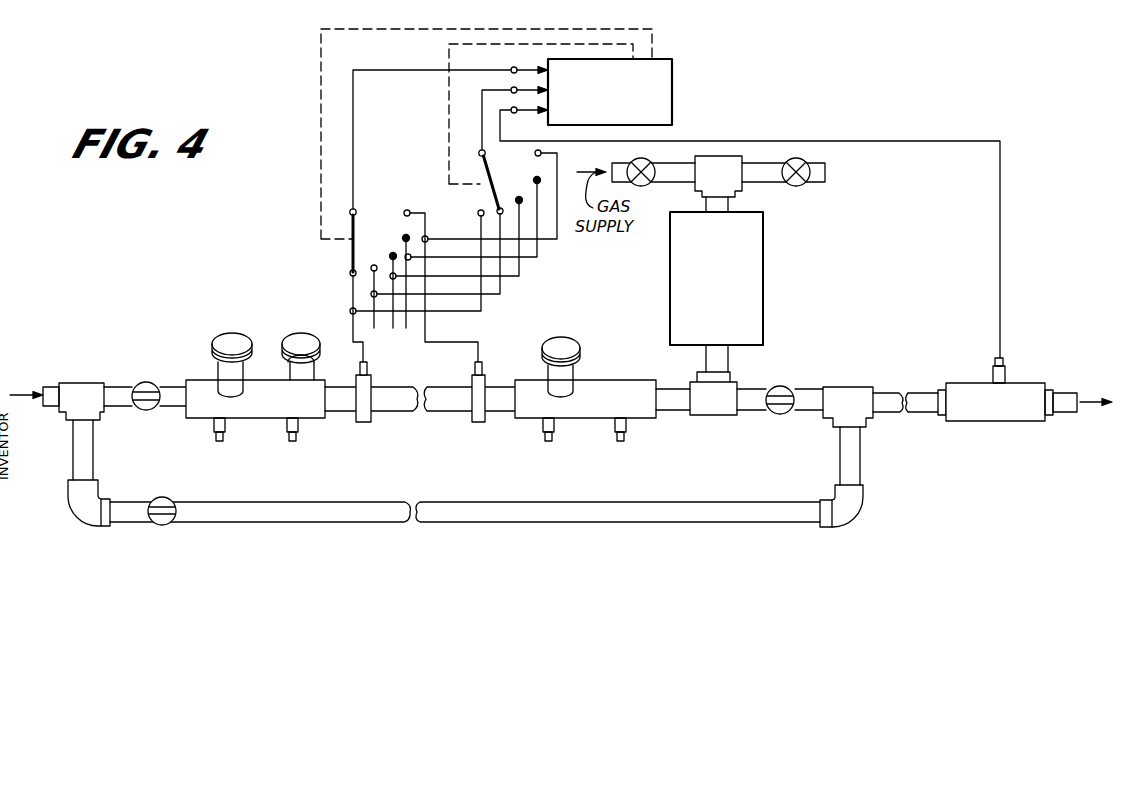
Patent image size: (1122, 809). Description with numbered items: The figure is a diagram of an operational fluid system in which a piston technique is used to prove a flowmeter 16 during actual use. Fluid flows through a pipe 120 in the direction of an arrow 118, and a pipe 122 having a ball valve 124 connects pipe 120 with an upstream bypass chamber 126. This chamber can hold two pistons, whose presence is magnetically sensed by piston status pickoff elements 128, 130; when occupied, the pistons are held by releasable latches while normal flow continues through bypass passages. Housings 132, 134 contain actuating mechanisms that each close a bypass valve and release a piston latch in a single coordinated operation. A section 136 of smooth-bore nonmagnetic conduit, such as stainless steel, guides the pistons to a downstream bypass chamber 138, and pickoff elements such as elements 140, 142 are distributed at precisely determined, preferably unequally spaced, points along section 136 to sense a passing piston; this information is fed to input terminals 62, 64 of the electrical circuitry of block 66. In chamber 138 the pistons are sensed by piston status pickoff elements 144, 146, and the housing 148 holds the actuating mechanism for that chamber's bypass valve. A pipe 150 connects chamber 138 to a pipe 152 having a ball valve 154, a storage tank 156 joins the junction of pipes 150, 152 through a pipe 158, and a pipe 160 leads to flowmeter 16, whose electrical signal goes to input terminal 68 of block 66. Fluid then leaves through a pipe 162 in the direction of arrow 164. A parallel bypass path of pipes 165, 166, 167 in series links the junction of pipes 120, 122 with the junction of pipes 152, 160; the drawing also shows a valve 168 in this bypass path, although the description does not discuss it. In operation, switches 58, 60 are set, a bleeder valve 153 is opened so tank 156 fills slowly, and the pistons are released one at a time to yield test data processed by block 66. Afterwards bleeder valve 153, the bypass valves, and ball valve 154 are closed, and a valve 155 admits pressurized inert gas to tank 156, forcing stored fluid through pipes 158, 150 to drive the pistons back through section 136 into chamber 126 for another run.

The flowmeter 16 is at (975, 382).
The switch 58 is at (391, 237).
The switch 60 is at (529, 177).
The input terminal 62 is at (514, 67).
The input terminal 64 is at (510, 90).
The electrical circuitry block 66 is at (672, 78).
The input terminal 68 is at (510, 110).
The arrow 118 is at (27, 394).
The pipe 120 is at (50, 386).
The pipe 122 is at (125, 387).
The ball valve 124 is at (147, 407).
The upstream bypass chamber 126 is at (319, 420).
The piston status pickoff element 128 is at (226, 426).
The piston status pickoff element 130 is at (288, 432).
The actuating mechanism housing 132 is at (247, 334).
The actuating mechanism housing 134 is at (310, 333).
The conduit section 136 is at (356, 424).
The downstream bypass chamber 138 is at (622, 380).
The pickoff element 140 is at (371, 422).
The pickoff element 142 is at (481, 424).
The piston status pickoff element 144 is at (543, 430).
The piston status pickoff element 146 is at (615, 431).
The actuating mechanism housing 148 is at (560, 337).
The pipe 150 is at (678, 414).
The pipe 152 is at (760, 412).
The bleeder valve 153 is at (801, 158).
The ball valve 154 is at (791, 413).
The valve 155 is at (655, 164).
The storage tank 156 is at (798, 252).
The pipe 158 is at (729, 364).
The pipe 160 is at (927, 414).
The pipe 162 is at (1069, 390).
The arrow 164 is at (1092, 405).
The pipe 165 is at (118, 430).
The pipe 166 is at (863, 458).
The pipe 167 is at (668, 502).
The return valve 168 is at (166, 497).